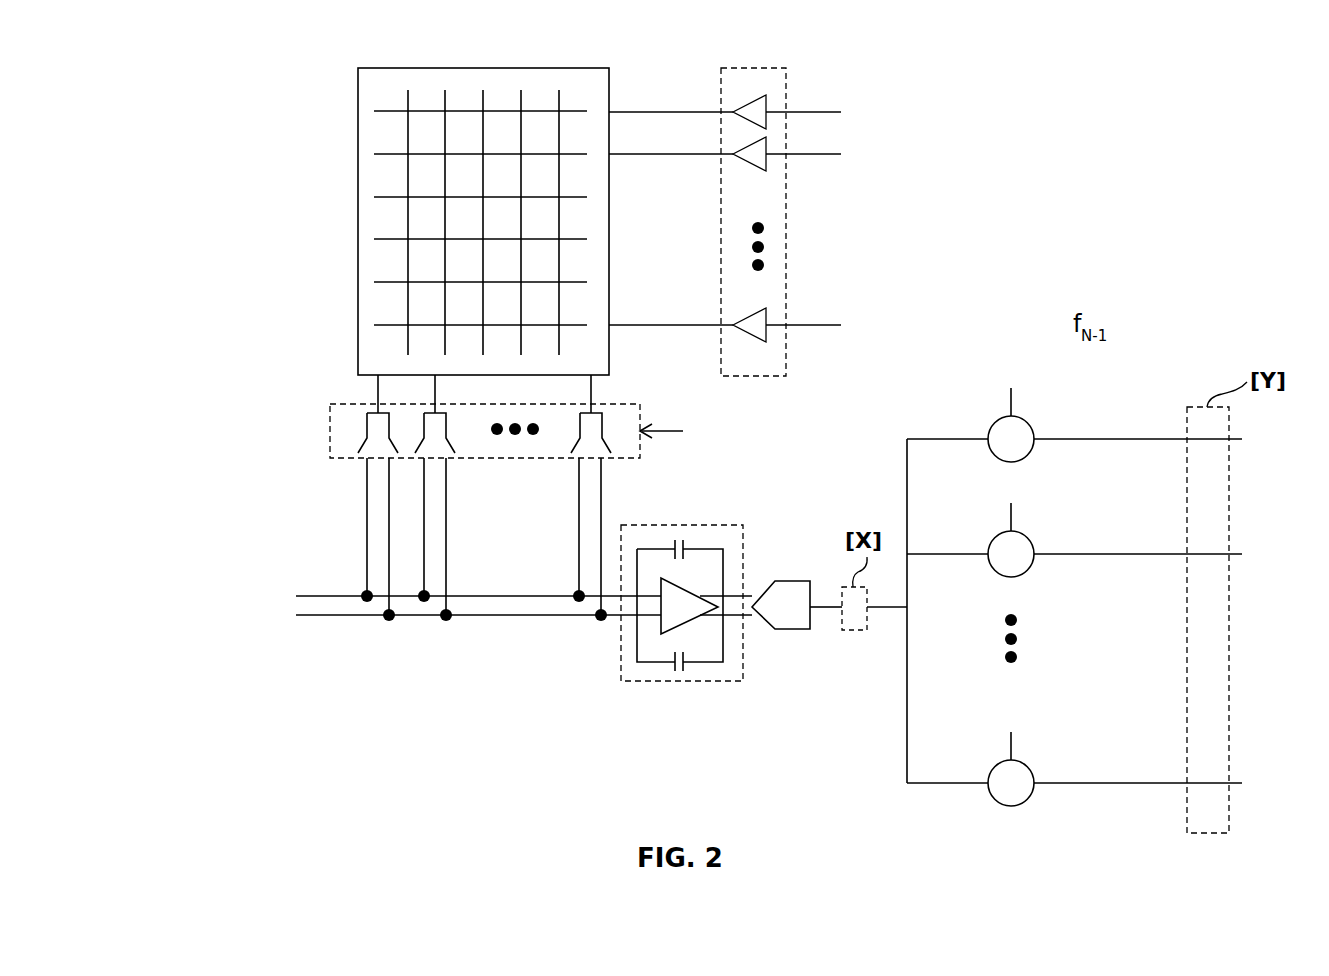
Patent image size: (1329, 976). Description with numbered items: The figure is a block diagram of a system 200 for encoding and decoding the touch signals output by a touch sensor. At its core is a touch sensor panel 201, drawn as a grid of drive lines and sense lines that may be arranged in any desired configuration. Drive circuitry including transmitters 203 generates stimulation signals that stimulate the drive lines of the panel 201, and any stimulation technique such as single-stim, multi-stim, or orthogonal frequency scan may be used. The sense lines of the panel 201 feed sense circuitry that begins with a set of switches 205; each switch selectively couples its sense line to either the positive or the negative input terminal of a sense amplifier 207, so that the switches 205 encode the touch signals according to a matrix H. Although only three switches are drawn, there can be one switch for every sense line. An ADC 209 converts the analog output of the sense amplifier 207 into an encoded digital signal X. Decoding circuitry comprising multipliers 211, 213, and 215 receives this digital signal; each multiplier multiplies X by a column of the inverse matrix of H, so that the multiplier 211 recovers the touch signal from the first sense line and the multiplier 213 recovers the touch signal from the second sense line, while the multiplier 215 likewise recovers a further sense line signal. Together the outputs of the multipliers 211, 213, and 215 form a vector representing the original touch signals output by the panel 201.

The system 200 is at (191, 116).
The touch sensor panel 201 is at (358, 179).
The transmitters 203 is at (757, 68).
The switches 205 is at (330, 423).
The sense amplifier 207 is at (660, 681).
The ADC 209 is at (795, 630).
The multiplier 211 is at (1033, 452).
The multiplier 213 is at (1033, 567).
The multiplier 215 is at (1033, 800).